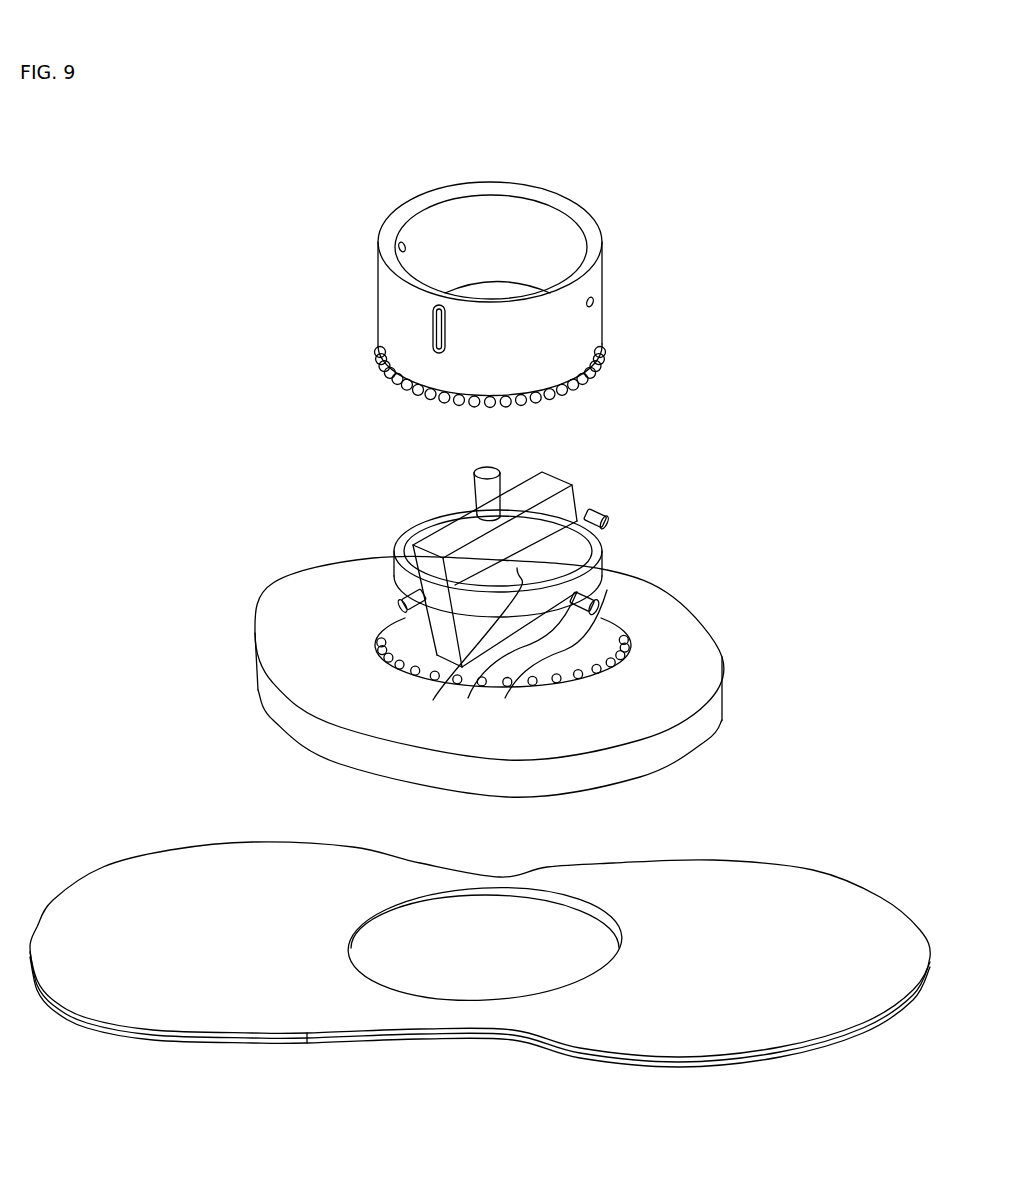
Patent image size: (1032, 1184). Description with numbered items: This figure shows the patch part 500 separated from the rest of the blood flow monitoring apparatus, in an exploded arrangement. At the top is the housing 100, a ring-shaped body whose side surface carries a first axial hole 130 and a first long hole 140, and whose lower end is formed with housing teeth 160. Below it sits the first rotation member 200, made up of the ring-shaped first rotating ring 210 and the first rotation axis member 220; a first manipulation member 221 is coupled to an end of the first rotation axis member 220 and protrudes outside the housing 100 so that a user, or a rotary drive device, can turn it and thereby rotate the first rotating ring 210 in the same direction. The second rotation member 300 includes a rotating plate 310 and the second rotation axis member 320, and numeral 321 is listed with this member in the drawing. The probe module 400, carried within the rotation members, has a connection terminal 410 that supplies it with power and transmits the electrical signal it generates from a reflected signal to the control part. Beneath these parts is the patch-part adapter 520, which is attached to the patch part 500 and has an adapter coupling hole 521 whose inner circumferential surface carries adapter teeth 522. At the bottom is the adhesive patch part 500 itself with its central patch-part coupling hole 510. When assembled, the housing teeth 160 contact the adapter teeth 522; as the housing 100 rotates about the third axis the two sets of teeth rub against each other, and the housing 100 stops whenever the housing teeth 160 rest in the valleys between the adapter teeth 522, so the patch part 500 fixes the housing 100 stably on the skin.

The housing 100 is at (485, 257).
The first axial hole 130 is at (400, 247).
The first long hole 140 is at (440, 332).
The housing teeth 160 is at (410, 393).
The first rotation member 200 is at (623, 382).
The first rotating ring 210 is at (603, 570).
The first rotation axis member 220 is at (410, 566).
The first manipulation member 221 is at (606, 520).
The second rotation member 300 is at (683, 512).
The rotating plate 310 is at (683, 512).
The second rotation axis member 320 is at (701, 543).
The curved member end 321 is at (719, 571).
The probe module 400 is at (550, 512).
The connection terminal 410 is at (502, 498).
The patch part 500 is at (480, 934).
The patch-part coupling hole 510 is at (576, 903).
The patch-part adapter 520 is at (582, 648).
The adapter coupling hole 521 is at (632, 633).
The adapter teeth 522 is at (600, 622).